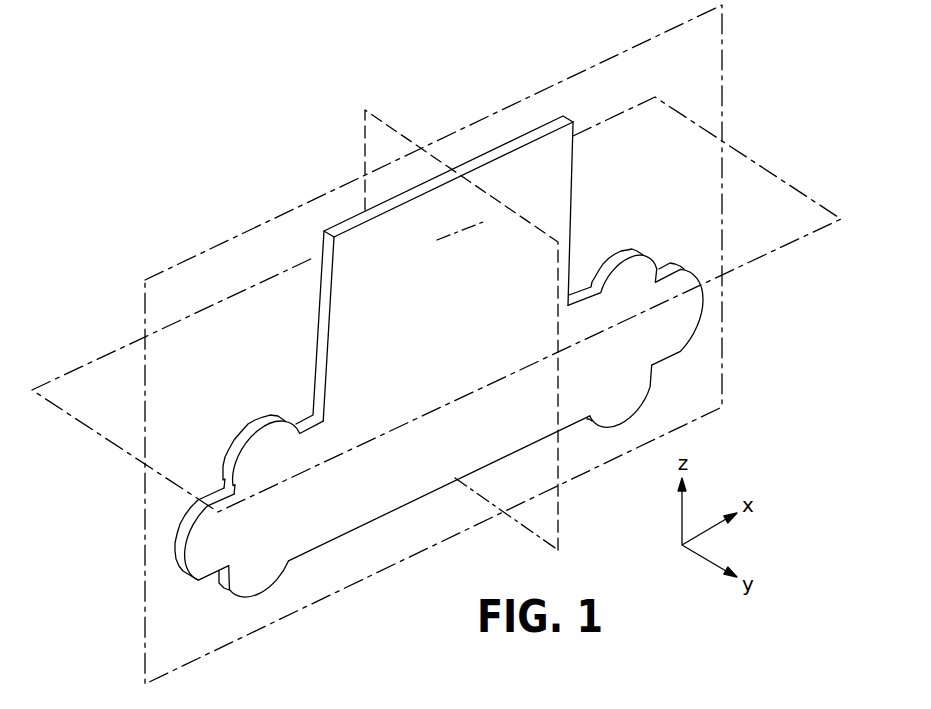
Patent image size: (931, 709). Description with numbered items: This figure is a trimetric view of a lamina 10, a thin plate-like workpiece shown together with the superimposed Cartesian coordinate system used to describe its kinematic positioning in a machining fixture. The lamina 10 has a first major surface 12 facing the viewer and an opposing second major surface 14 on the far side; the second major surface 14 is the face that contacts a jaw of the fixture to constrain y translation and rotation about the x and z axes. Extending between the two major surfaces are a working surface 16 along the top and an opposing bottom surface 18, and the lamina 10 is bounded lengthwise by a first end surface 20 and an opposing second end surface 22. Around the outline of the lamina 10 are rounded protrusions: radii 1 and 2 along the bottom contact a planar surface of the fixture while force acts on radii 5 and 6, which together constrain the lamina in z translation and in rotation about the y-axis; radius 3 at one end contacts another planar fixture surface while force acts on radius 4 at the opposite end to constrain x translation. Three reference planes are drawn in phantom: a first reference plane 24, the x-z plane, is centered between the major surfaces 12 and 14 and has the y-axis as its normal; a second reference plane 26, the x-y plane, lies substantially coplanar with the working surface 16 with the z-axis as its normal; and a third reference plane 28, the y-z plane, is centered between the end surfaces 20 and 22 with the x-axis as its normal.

The lamina 10 is at (205, 178).
The first major surface 12 is at (435, 355).
The radius 1 is at (258, 594).
The radius 2 is at (620, 424).
The radius 3 is at (701, 293).
The radius 4 is at (178, 560).
The radius 5 is at (257, 424).
The radius 6 is at (622, 250).
The second major surface 14 is at (460, 232).
The working surface 16 is at (557, 124).
The bottom surface 18 is at (380, 514).
The first end surface 20 is at (318, 350).
The second end surface 22 is at (573, 186).
The first reference plane 24 is at (724, 28).
The second reference plane 26 is at (762, 258).
The third reference plane 28 is at (560, 542).